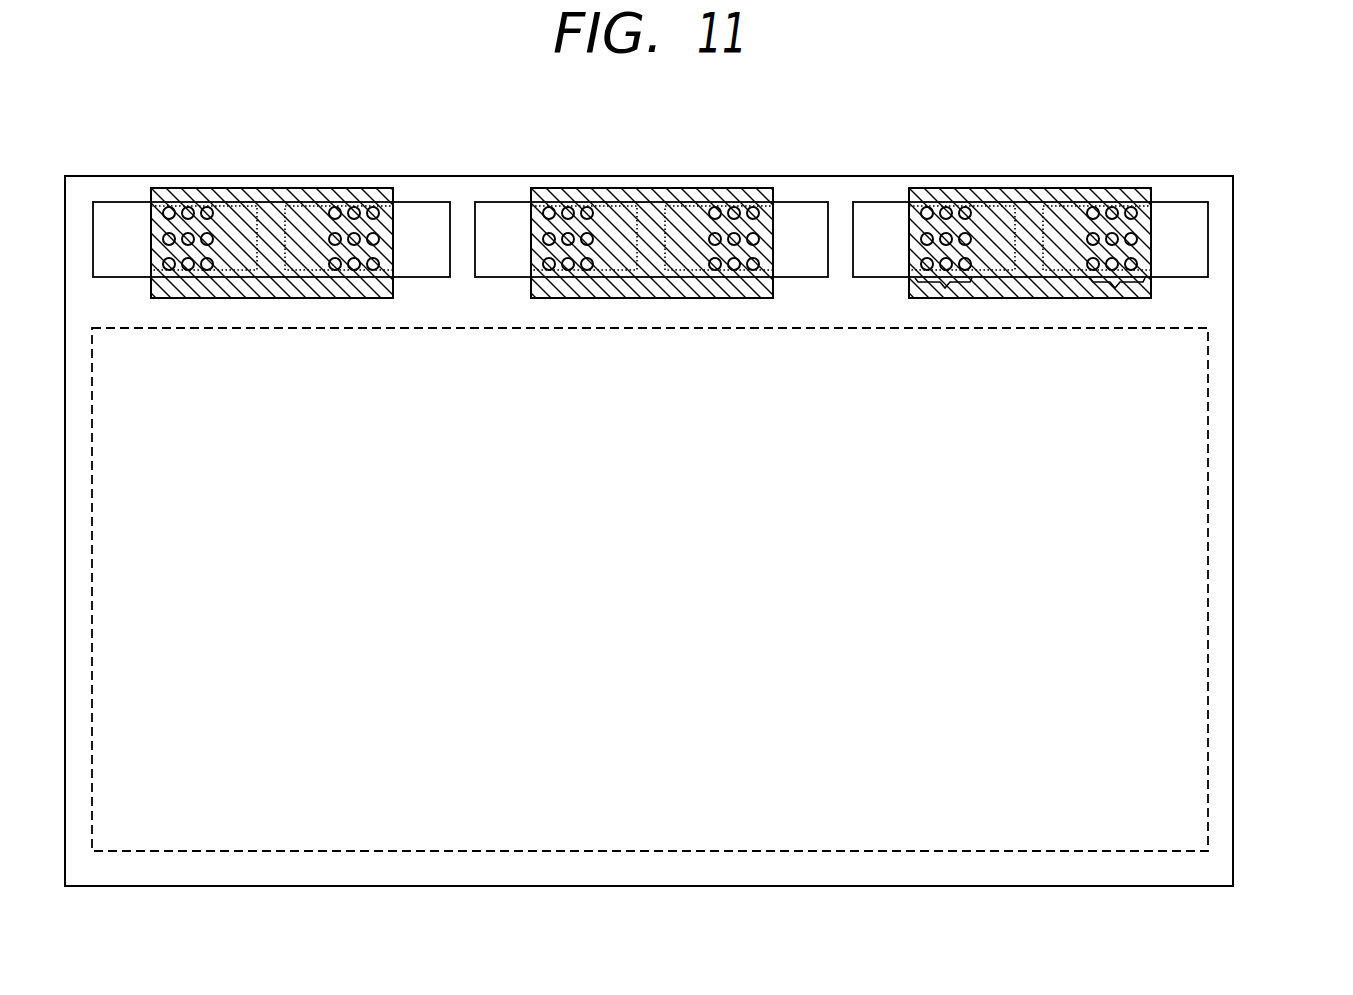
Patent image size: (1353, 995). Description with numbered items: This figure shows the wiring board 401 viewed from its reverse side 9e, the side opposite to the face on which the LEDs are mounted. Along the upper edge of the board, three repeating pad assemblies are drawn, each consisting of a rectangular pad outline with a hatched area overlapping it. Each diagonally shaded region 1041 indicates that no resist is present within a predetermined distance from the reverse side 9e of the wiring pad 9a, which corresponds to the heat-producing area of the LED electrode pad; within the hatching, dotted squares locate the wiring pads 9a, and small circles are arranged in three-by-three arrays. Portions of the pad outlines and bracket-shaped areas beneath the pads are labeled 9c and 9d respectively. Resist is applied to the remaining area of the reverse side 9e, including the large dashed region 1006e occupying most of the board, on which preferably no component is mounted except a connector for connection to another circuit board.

The wiring board 401 is at (1170, 176).
The region 1006e is at (1177, 504).
The diagonally shaded region 1041 is at (229, 188).
The wiring pad 9a is at (1005, 215).
The wiring pad 9c is at (873, 268).
The connection portion 9d is at (945, 288).
The reverse side 9e is at (838, 192).